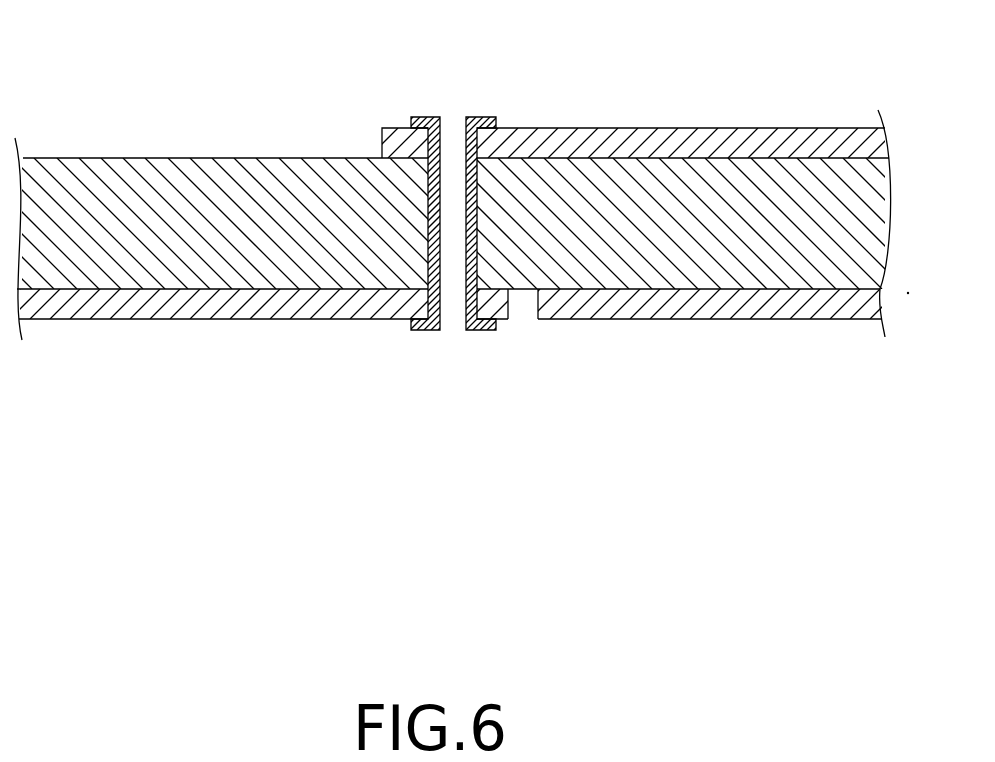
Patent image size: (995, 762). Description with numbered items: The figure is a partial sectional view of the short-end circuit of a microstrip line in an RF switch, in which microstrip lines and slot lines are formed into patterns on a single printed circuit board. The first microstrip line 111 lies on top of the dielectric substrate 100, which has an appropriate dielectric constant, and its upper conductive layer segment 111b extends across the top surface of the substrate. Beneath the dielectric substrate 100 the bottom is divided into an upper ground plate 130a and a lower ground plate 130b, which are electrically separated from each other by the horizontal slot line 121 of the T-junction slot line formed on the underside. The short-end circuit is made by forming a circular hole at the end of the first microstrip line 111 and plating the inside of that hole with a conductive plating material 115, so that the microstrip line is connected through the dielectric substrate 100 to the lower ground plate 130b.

The dielectric substrate 100 is at (150, 173).
The first microstrip line 111 is at (618, 138).
The upper conductive layer segment 111b is at (382, 147).
The conductive plating material 115 is at (470, 117).
The horizontal slot line 121 is at (525, 312).
The upper ground plate 130a is at (688, 302).
The lower ground plate 130b is at (247, 318).